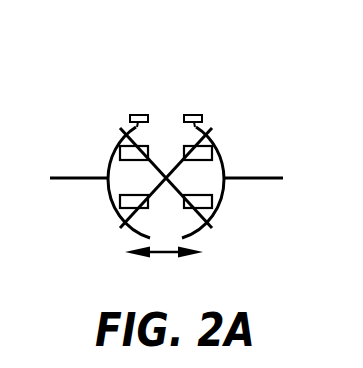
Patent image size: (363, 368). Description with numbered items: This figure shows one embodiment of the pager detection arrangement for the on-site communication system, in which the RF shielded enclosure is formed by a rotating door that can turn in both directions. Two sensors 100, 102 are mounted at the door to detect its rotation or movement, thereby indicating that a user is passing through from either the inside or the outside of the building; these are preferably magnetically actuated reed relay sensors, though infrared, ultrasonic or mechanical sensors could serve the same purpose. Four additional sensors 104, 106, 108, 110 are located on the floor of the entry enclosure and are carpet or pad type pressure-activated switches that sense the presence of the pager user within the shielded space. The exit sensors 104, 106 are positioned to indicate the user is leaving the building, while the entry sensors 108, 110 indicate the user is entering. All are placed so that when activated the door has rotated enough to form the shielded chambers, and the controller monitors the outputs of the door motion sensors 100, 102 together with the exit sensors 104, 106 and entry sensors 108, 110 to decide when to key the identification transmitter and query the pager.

The sensor 100 is at (138, 114).
The sensor 102 is at (194, 114).
The sensor 104 is at (213, 127).
The sensor 106 is at (128, 128).
The sensor 108 is at (122, 222).
The sensor 110 is at (210, 222).